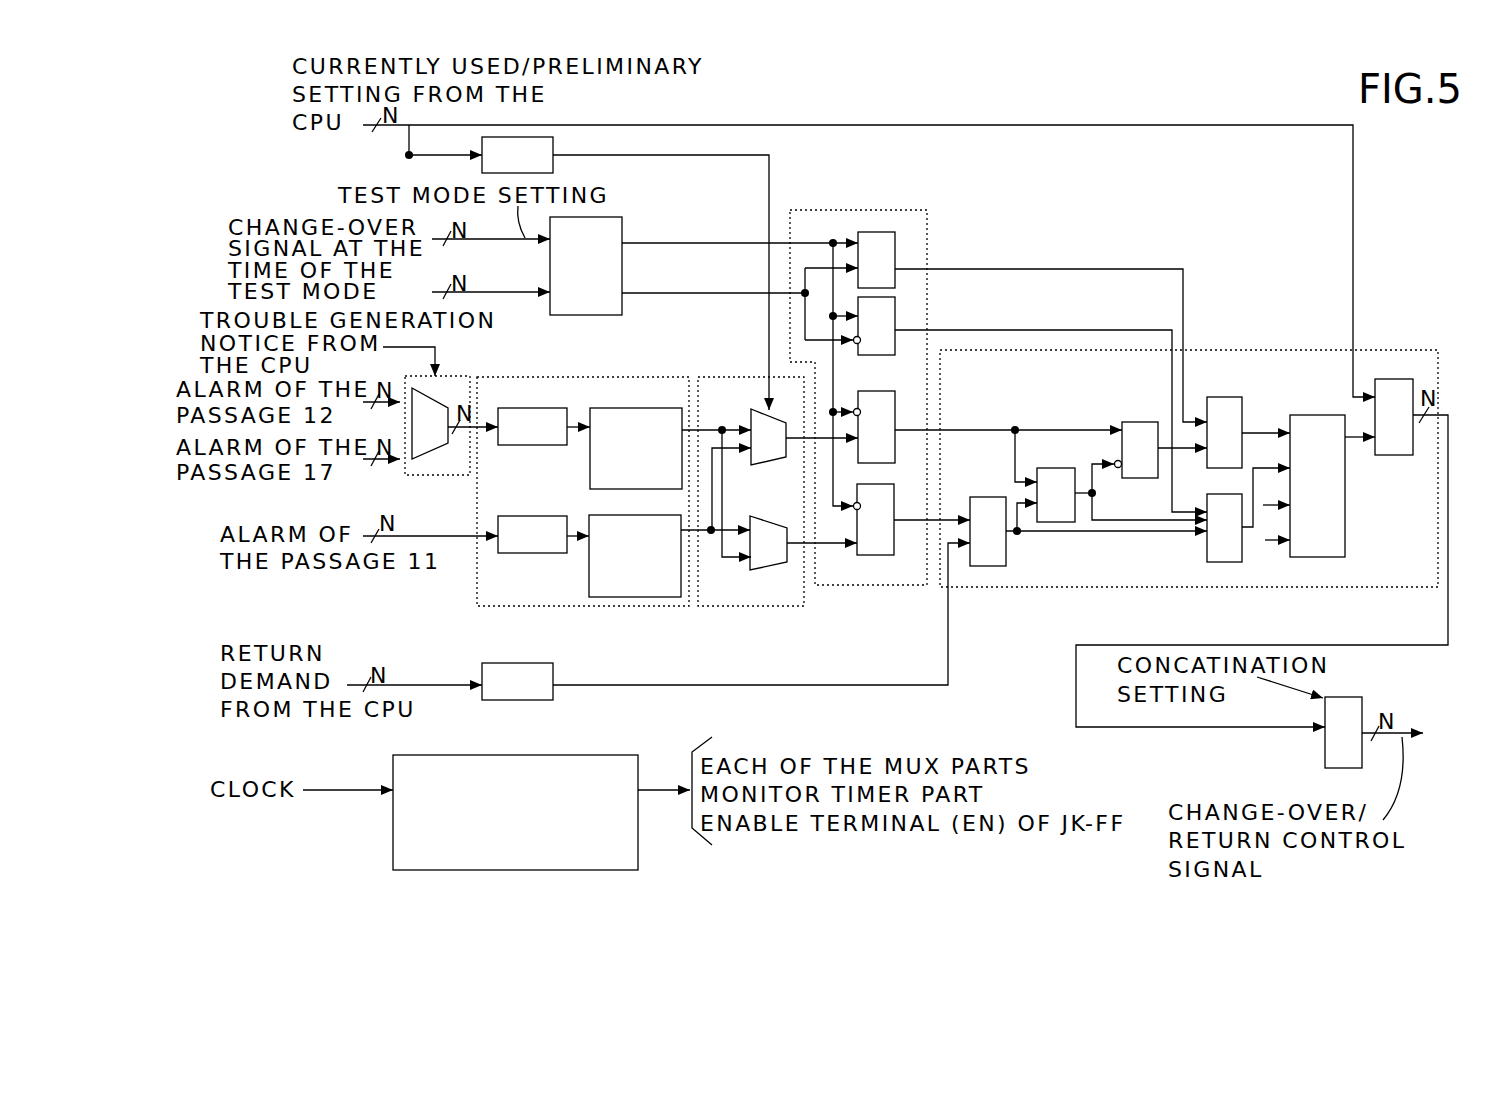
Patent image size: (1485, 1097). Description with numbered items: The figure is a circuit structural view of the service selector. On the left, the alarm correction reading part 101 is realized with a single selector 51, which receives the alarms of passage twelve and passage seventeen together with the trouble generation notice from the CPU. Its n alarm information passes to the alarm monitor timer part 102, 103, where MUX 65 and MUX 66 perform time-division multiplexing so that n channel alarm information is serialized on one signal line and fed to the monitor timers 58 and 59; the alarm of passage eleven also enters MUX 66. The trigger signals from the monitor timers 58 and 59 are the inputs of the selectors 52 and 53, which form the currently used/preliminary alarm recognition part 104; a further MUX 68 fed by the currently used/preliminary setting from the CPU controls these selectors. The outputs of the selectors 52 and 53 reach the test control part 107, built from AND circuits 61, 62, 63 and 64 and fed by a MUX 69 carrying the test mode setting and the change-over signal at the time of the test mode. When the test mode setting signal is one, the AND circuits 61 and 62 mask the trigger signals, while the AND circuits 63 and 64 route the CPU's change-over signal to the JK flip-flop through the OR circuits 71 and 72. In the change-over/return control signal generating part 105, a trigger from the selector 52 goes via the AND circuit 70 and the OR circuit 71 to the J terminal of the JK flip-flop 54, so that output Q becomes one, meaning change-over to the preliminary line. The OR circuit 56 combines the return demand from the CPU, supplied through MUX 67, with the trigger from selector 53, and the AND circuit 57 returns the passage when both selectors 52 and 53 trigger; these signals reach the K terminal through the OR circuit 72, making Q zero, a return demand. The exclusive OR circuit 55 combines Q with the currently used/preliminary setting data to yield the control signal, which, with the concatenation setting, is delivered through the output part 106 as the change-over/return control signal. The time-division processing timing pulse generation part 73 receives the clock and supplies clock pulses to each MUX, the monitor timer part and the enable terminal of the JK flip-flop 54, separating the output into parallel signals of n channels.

The selector 51 is at (440, 386).
The selector 52 is at (764, 466).
The selector 53 is at (764, 571).
The JK flip-flop 54 is at (1308, 415).
The exclusive OR circuit 55 is at (1388, 379).
The OR circuit 56 is at (988, 483).
The AND circuit 57 is at (1052, 468).
The monitor timer 58 is at (626, 408).
The monitor timer 59 is at (626, 515).
The AND circuit 61 is at (895, 420).
The AND circuit 62 is at (894, 507).
The AND circuit 63 is at (895, 252).
The AND circuit 64 is at (895, 318).
The MUX 65 is at (548, 394).
The MUX 66 is at (538, 516).
The MUX part 67 is at (520, 663).
The MUX part 68 is at (555, 152).
The MUX part 69 is at (604, 217).
The AND circuit 70 is at (1132, 422).
The OR circuit 71 is at (1218, 397).
The OR circuit 72 is at (1216, 562).
The time-division processing timing pulse generation part 73 is at (582, 755).
The alarm correction reading part 101 is at (452, 378).
The alarm monitor timer part 102 is at (585, 479).
The monitor timer part 103 is at (588, 378).
The currently used/preliminary alarm recognition part 104 is at (712, 378).
The change-over/return control signal generating part 105 is at (1178, 588).
The output part 106 is at (1333, 768).
The test control part 107 is at (860, 212).